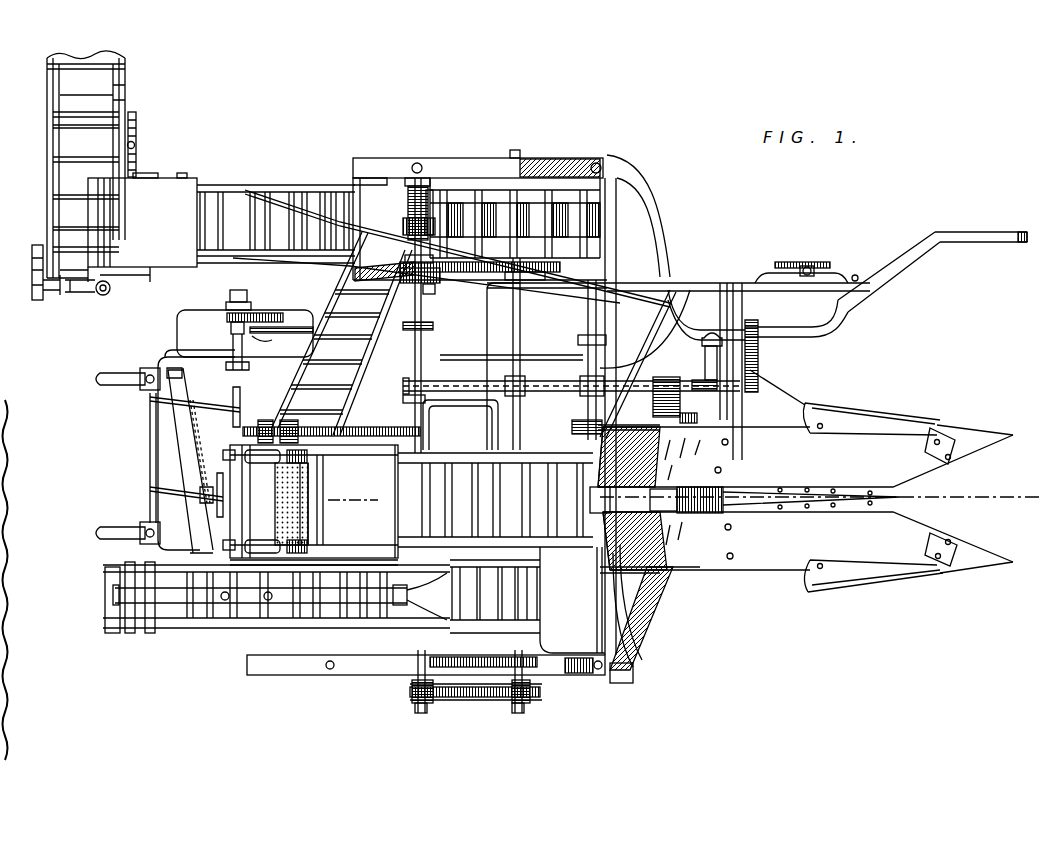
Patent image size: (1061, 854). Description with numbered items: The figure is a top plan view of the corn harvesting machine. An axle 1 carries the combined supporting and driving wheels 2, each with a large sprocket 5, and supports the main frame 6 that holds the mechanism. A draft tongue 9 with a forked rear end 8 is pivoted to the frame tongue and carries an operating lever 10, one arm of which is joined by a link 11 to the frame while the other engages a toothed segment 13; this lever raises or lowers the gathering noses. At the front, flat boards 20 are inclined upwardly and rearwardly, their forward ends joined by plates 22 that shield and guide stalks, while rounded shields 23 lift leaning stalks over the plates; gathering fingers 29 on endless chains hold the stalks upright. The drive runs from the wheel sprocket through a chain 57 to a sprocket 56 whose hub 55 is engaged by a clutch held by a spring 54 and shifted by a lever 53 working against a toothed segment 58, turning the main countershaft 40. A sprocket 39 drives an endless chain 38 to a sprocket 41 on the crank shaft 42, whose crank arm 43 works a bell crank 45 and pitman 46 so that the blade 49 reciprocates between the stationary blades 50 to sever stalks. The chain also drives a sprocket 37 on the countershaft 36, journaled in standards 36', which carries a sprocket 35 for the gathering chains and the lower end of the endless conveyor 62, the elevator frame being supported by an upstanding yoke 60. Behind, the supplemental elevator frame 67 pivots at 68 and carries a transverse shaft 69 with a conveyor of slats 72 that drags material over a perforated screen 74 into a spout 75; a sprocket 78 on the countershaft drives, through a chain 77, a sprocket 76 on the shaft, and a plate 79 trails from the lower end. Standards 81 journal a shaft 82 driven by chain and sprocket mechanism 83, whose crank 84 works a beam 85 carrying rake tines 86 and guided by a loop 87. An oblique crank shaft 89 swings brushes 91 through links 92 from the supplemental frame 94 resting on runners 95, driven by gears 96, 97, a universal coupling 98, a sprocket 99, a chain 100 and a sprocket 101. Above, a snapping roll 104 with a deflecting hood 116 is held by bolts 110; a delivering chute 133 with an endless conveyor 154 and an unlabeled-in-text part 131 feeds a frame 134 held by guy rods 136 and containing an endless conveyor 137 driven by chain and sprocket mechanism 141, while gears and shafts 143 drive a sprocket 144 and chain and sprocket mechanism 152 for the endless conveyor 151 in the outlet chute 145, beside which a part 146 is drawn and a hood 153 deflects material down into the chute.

The axle 1 is at (521, 153).
The combined supporting and driving wheels 2 is at (540, 217).
The large sprocket 5 is at (557, 264).
The main frame 6 is at (614, 281).
The forked rear end 8 is at (880, 266).
The draft tongue 9 is at (993, 238).
The operating lever 10 is at (808, 266).
The link 11 is at (835, 281).
The toothed segment 13 is at (787, 264).
The flat boards 20 is at (805, 498).
The plates 22 is at (977, 437).
The shields 23 is at (867, 418).
The gathering fingers 29 is at (820, 497).
The sprocket 35 is at (578, 433).
The countershaft 36 is at (586, 360).
The standards 36' is at (645, 329).
The sprocket 37 is at (565, 390).
The endless chain 38 is at (510, 425).
The sprocket 39 is at (410, 389).
The main countershaft 40 is at (427, 375).
The sprocket 41 is at (717, 390).
The crank shaft 42 is at (701, 352).
The crank arm 43 is at (703, 348).
The bell crank 45 is at (678, 400).
The pitman 46 is at (710, 430).
The blade 49 is at (713, 513).
The stationary blades 50 is at (762, 510).
The lever 53 is at (433, 200).
The spring 54 is at (418, 187).
The hub 55 is at (418, 210).
The sprocket 56 is at (414, 295).
The chain 57 is at (428, 278).
The toothed segment 58 is at (437, 223).
The upstanding yoke 60 is at (450, 436).
The endless conveyor 62 is at (450, 505).
The frame of supplemental elevator 67 is at (493, 628).
The pivot 68 is at (452, 680).
The transverse shaft 69 is at (517, 704).
The transverse slats 72 is at (498, 585).
The perforated portion 74 is at (493, 607).
The spout 75 is at (590, 612).
The sprocket 76 is at (542, 692).
The chain 77 is at (460, 697).
The sprocket 78 is at (408, 694).
The plate 79 is at (110, 628).
The standards 81 is at (500, 550).
The shaft 82 is at (448, 538).
The chain and sprocket mechanism 83 is at (480, 680).
The crank 84 is at (418, 613).
The beam 85 is at (342, 560).
The rake tines 86 is at (103, 586).
The guide loop 87 is at (250, 602).
The obliquely disposed crank shaft 89 is at (220, 440).
The brush 91 is at (213, 464).
The link 92 is at (197, 403).
The supplemental frame 94 is at (159, 361).
The runners 95 is at (110, 378).
The gear 96 is at (281, 314).
The gear 97 is at (228, 311).
The universal coupling 98 is at (231, 334).
The sprocket 99 is at (281, 342).
The chain 100 is at (386, 307).
The sprocket 101 is at (433, 328).
The snapping roll 104 is at (308, 487).
The bolts 110 is at (278, 538).
The deflecting hood 116 is at (314, 501).
The chain 131 is at (331, 427).
The delivering chute 133 is at (290, 394).
The frame 134 is at (317, 190).
The guy rods 136 is at (258, 190).
The endless conveyor 137 is at (295, 197).
The chain and sprocket mechanism 141 is at (432, 294).
The gears and shafts 143 is at (93, 295).
The sprocket 144 is at (38, 291).
The outlet chute 145 is at (122, 103).
The guide 146 is at (133, 148).
The endless conveyor 151 is at (60, 152).
The chain and sprocket mechanism 152 is at (36, 262).
The hood 153 is at (142, 227).
The endless conveyor 154 is at (327, 430).